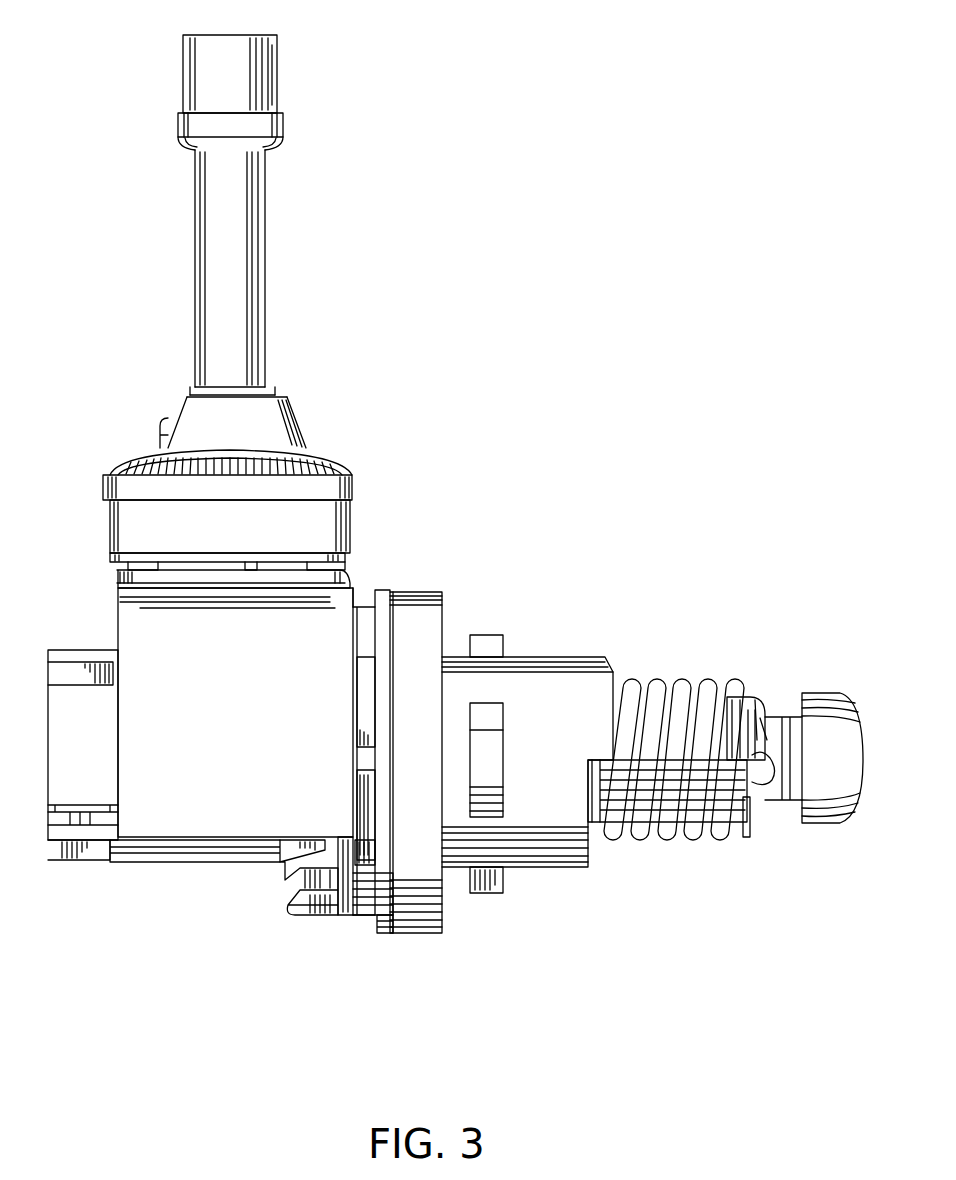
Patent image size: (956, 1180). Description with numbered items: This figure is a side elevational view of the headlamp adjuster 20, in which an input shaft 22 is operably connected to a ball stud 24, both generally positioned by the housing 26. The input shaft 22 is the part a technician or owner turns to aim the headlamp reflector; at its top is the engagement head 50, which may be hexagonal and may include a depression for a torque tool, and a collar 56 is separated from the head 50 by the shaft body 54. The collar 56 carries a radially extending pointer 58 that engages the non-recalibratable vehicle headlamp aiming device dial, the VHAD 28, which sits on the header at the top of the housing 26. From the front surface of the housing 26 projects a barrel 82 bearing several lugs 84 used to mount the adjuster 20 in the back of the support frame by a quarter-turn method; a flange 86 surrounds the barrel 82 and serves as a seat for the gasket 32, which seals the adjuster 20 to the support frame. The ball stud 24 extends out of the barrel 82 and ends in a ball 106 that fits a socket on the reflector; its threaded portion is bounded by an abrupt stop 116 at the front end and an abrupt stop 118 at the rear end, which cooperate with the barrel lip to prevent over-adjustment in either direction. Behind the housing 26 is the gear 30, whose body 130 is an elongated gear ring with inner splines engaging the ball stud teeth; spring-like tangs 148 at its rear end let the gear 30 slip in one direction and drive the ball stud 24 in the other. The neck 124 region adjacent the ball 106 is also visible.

The adjuster 20 is at (445, 378).
The input shaft 22 is at (177, 254).
The ball stud 24 is at (698, 845).
The housing 26 is at (325, 627).
The non-recalibratable vehicle headlamp aiming device dial (VHAD) 28 is at (128, 527).
The gear 30 is at (60, 760).
The gasket 32 is at (418, 622).
The engagement head 50 is at (280, 80).
The shaft body 54 is at (210, 241).
The collar 56 is at (221, 417).
The pointer 58 is at (170, 432).
The barrel 82 is at (529, 845).
The lugs 84 is at (490, 750).
The flange 86 is at (368, 900).
The ball 106 is at (830, 705).
The abrupt stop 116 is at (612, 772).
The abrupt stop 118 is at (765, 758).
The neck 124 is at (782, 725).
The body 130 is at (172, 857).
The tangs 148 is at (70, 673).